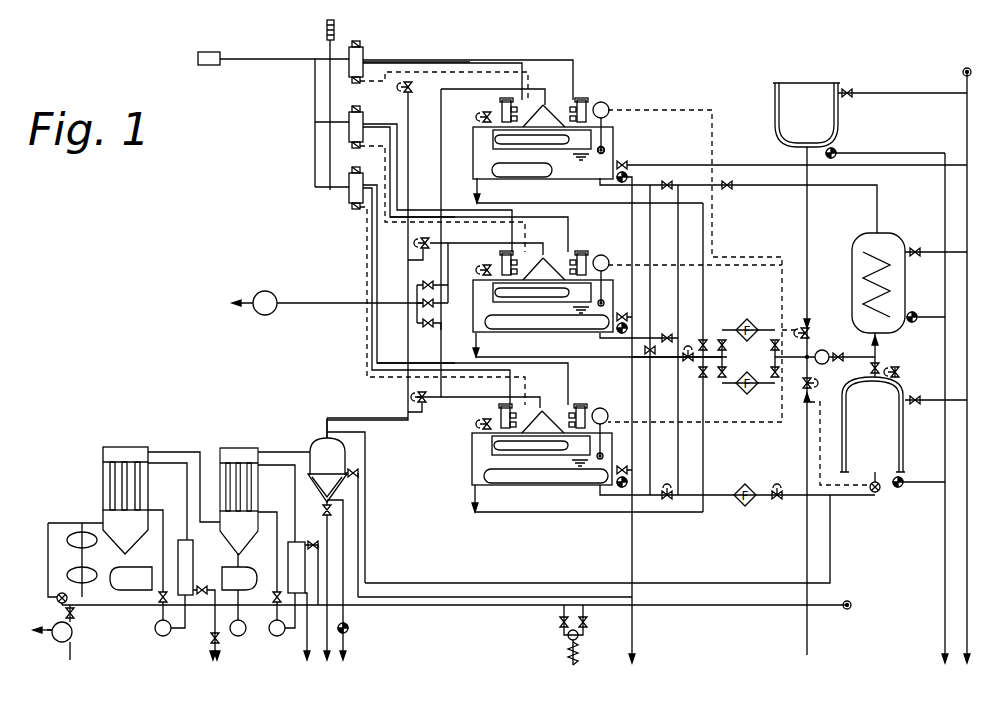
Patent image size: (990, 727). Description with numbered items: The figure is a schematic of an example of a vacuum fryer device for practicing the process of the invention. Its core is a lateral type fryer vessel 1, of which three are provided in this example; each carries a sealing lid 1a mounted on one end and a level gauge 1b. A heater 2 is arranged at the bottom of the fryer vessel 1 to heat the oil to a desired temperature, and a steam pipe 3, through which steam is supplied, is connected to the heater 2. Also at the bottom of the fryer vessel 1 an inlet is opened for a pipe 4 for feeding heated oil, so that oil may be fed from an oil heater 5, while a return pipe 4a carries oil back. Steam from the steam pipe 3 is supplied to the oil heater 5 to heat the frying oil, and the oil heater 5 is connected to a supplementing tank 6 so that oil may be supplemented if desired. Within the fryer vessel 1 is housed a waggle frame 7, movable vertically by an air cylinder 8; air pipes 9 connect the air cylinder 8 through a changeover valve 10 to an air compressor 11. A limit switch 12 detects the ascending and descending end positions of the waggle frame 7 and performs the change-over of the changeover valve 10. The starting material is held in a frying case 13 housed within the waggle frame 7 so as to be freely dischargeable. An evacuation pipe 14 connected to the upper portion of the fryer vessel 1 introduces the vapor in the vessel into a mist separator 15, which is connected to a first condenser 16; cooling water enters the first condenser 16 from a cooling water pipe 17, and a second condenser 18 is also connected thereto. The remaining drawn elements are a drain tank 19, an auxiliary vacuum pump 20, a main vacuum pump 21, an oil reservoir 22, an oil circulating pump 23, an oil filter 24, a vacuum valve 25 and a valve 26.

The fryer vessel 1 is at (486, 152).
The sealing lid 1a is at (614, 134).
The level gauge 1b is at (606, 151).
The heater 2 is at (520, 175).
The steam pipe 3 is at (744, 165).
The pipe for feeding heated oil 4 is at (606, 186).
The return pipe 4a is at (586, 204).
The oil heater 5 is at (902, 286).
The supplementing tank 6 is at (815, 90).
The waggle frame 7 is at (493, 140).
The air cylinder 8 is at (502, 104).
The air pipes 9 is at (475, 62).
The changeover valve 10 is at (372, 52).
The air compressor 11 is at (210, 52).
The limit switch 12 is at (585, 98).
The frying case 13 is at (543, 143).
The evacuation pipe 14 is at (500, 89).
The mist separator 15 is at (318, 442).
The first condenser 16 is at (240, 452).
The cooling water pipe 17 is at (275, 527).
The second condenser 18 is at (130, 452).
The drain tank 19 is at (120, 578).
The auxiliary vacuum pump 20 is at (266, 291).
The main vacuum pump 21 is at (54, 640).
The oil reservoir 22 is at (900, 433).
The oil circulating pump 23 is at (826, 350).
The oil filter 24 is at (747, 319).
The vacuum valve 25 is at (412, 95).
The valve 26 is at (482, 114).